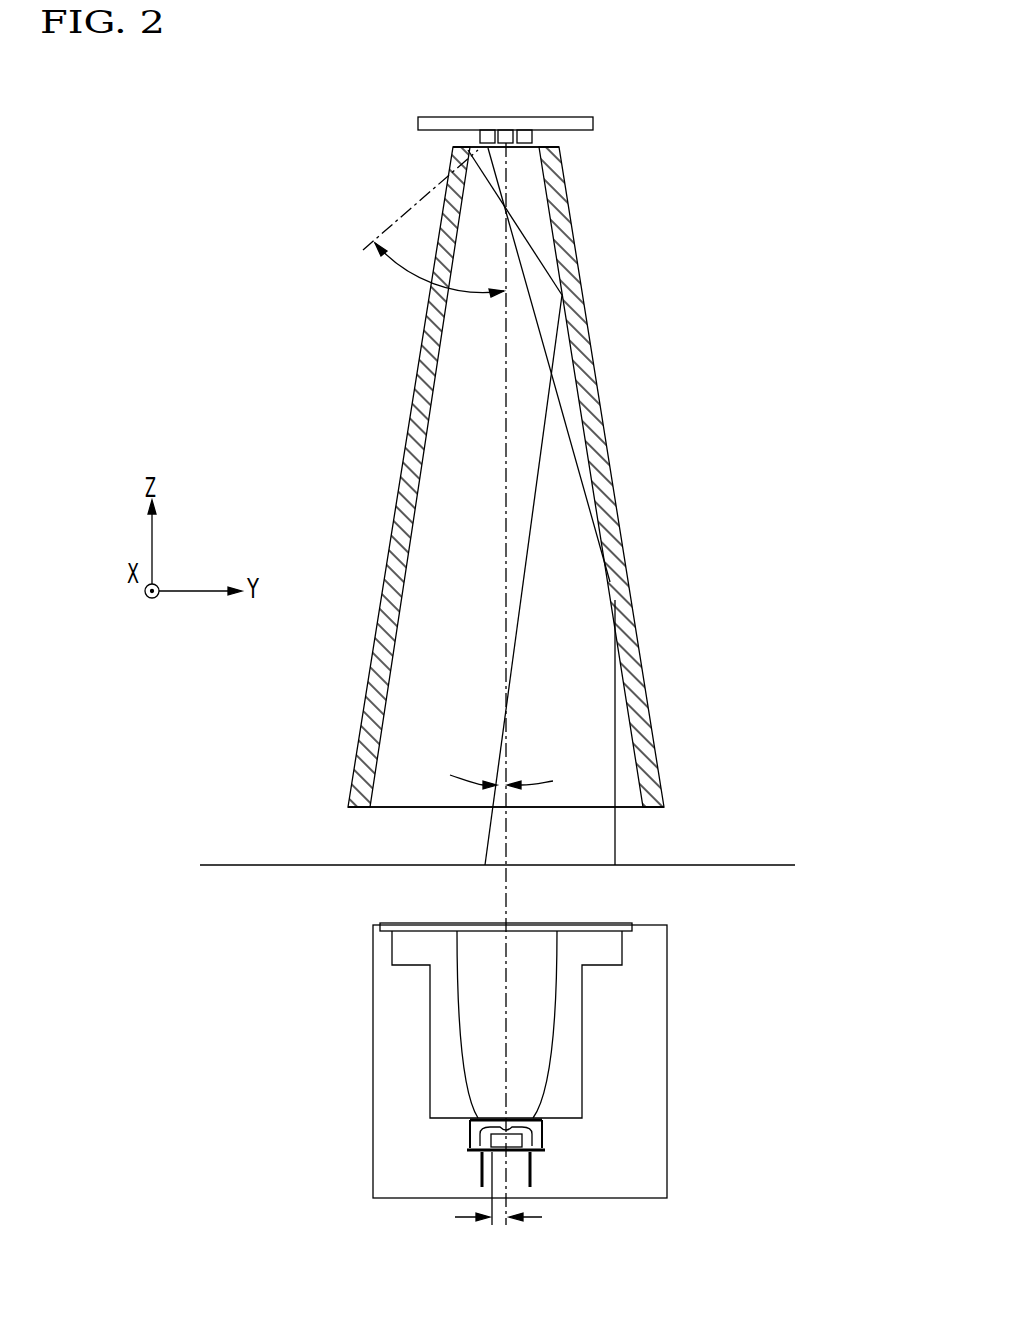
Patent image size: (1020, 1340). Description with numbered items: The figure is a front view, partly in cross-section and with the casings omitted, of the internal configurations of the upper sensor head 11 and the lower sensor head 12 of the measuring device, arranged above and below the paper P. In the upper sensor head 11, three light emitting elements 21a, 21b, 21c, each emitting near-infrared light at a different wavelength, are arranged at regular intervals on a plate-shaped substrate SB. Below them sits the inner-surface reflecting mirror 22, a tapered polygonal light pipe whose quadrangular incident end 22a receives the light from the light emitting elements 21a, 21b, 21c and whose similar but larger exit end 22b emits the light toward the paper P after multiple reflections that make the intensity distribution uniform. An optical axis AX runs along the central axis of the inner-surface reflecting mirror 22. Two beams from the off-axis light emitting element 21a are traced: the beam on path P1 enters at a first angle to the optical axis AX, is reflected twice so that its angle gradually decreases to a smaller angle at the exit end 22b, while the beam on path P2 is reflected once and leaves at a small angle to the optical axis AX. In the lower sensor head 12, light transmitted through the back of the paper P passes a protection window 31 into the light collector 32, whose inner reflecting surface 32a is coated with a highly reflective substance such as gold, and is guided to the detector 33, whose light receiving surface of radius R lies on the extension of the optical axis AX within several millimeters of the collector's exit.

The upper sensor head 11 is at (706, 222).
The lower sensor head 12 is at (684, 1131).
The light emitting element 21a is at (483, 132).
The light emitting element 21b is at (506, 132).
The light emitting element 21c is at (535, 132).
The inner-surface reflecting mirror 22 is at (602, 417).
The incident end 22a is at (570, 140).
The exit end 22b is at (645, 821).
The protection window 31 is at (632, 927).
The light collector 32 is at (583, 1072).
The reflecting surface 32a is at (557, 1023).
The detector 33 is at (546, 1138).
The substrate SB is at (594, 124).
The optical axis AX is at (504, 555).
The paper P is at (778, 864).
The path P1 is at (525, 584).
The path P2 is at (567, 434).
The radius of the light receiving element R is at (500, 1226).